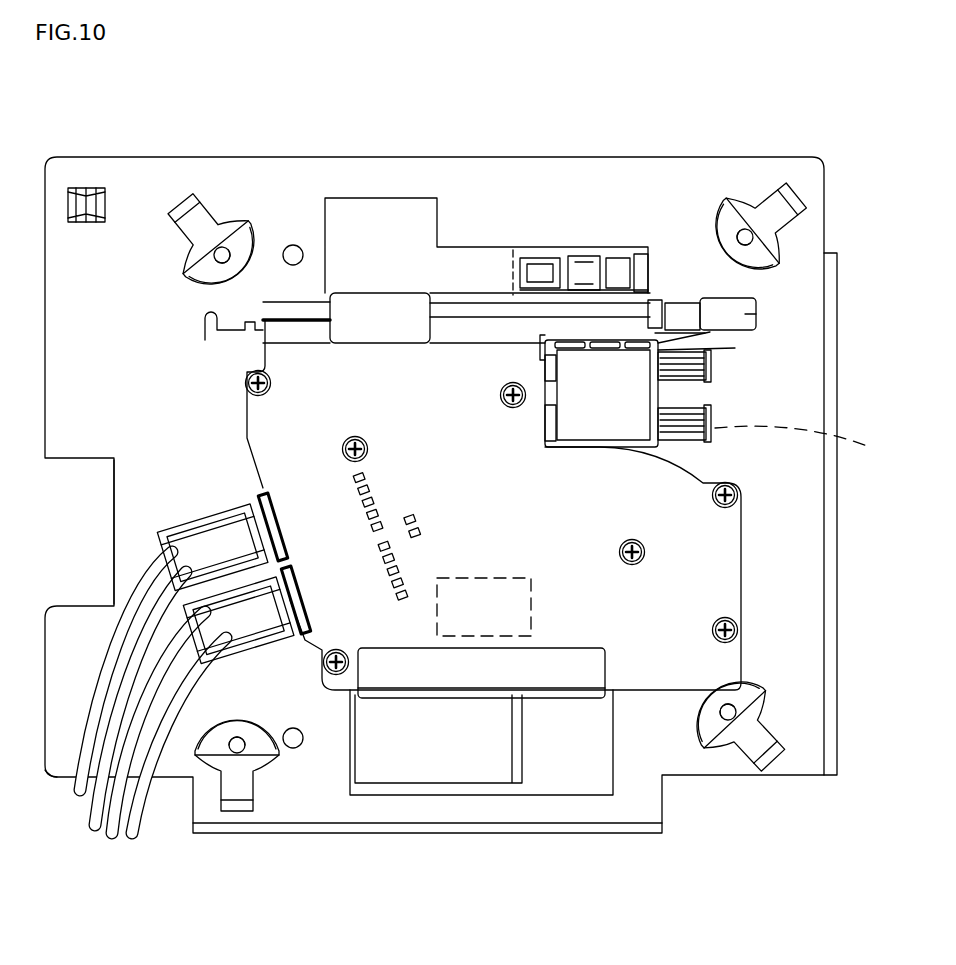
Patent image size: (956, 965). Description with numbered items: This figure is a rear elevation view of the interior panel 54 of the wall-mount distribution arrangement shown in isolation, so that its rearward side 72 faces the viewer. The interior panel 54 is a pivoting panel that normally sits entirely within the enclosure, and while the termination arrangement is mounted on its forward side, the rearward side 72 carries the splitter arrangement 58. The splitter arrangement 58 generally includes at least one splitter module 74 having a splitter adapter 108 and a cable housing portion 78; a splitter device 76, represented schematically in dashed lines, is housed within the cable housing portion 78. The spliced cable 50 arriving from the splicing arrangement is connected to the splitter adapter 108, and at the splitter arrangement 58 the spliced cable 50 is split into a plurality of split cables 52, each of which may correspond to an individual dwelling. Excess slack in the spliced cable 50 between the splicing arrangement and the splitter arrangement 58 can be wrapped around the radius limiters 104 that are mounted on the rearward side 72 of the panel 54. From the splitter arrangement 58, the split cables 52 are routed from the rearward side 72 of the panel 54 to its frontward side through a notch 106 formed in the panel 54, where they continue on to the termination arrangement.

The spliced cable 50 is at (797, 426).
The split cables 52 is at (125, 685).
The interior panel 54 is at (628, 188).
The splitter arrangement 58 is at (722, 388).
The rearward side 72 is at (138, 379).
The splitter module 74 is at (466, 244).
The splitter device 76 is at (473, 578).
The cable housing portion 78 is at (718, 568).
The radius limiters 104 is at (200, 218).
The notch 106 is at (57, 790).
The splitter adapter 108 is at (628, 363).